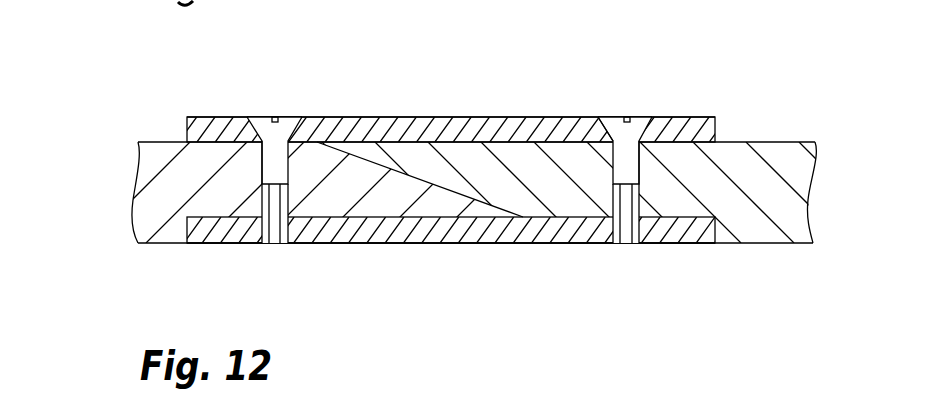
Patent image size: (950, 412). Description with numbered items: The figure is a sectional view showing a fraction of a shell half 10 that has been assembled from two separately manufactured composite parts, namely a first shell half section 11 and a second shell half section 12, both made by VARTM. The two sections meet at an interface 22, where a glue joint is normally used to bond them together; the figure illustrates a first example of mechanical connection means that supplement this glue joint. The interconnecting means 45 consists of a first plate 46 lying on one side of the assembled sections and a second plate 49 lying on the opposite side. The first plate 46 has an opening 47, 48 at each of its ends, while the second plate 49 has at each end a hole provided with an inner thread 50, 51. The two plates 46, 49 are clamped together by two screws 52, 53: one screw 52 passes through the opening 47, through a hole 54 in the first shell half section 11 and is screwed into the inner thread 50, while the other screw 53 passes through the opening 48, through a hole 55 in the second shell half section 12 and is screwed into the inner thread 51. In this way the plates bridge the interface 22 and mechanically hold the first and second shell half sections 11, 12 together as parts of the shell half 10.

The shell half 10 is at (491, 161).
The first shell half section 11 is at (230, 223).
The second shell half section 12 is at (731, 218).
The interface 22 is at (458, 218).
The interconnecting means 45 is at (452, 160).
The first plate 46 is at (412, 126).
The opening 47 is at (205, 117).
The opening 48 is at (592, 132).
The second plate 49 is at (543, 228).
The inner thread 50 is at (226, 167).
The inner thread 51 is at (677, 166).
The screw 52 is at (291, 117).
The screw 53 is at (645, 117).
The hole 54 is at (263, 172).
The hole 55 is at (638, 170).